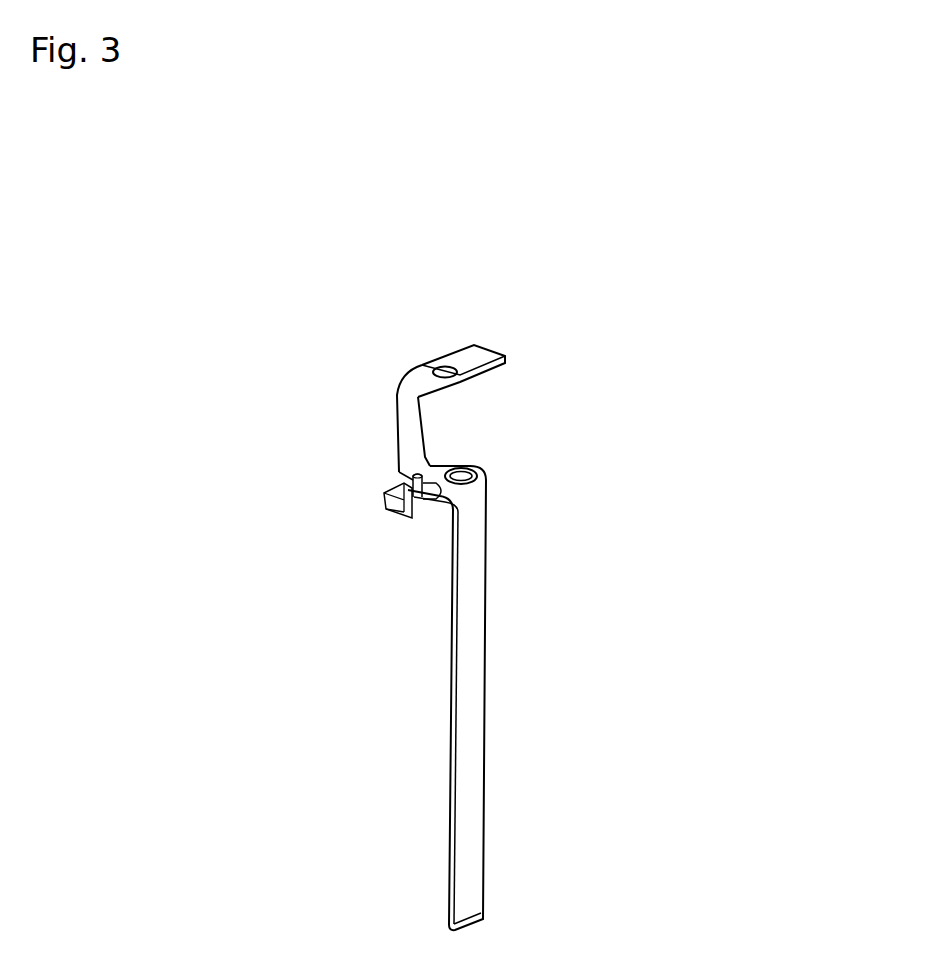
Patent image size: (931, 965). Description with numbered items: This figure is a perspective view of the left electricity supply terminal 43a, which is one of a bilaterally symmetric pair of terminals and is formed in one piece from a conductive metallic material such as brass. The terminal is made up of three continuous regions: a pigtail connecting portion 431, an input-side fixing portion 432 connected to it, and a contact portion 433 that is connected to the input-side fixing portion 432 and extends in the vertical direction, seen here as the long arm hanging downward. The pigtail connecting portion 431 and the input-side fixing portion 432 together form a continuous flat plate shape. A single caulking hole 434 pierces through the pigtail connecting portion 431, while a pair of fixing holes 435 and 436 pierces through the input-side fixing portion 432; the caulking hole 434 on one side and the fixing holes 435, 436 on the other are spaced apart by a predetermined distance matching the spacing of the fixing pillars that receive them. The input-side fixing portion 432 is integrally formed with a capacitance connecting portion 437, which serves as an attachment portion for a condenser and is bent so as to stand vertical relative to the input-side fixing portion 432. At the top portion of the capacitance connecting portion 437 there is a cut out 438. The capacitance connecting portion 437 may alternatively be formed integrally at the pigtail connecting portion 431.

The electricity supply terminal 43a is at (433, 305).
The pigtail connecting portion 431 is at (478, 350).
The input-side fixing portion 432 is at (481, 475).
The contact portion 433 is at (482, 728).
The caulking hole 434 is at (449, 364).
The fixing hole 435 is at (461, 467).
The fixing hole 436 is at (425, 452).
The capacitance connecting portion 437 is at (412, 505).
The cut out 438 is at (398, 472).